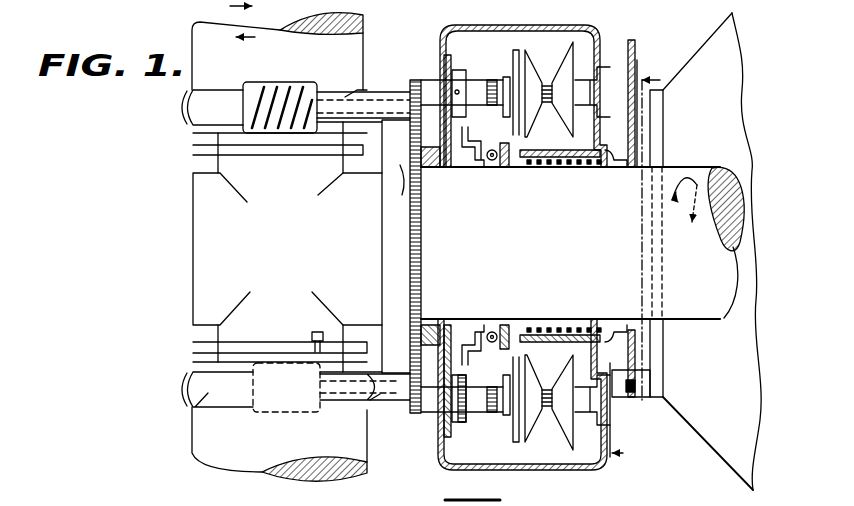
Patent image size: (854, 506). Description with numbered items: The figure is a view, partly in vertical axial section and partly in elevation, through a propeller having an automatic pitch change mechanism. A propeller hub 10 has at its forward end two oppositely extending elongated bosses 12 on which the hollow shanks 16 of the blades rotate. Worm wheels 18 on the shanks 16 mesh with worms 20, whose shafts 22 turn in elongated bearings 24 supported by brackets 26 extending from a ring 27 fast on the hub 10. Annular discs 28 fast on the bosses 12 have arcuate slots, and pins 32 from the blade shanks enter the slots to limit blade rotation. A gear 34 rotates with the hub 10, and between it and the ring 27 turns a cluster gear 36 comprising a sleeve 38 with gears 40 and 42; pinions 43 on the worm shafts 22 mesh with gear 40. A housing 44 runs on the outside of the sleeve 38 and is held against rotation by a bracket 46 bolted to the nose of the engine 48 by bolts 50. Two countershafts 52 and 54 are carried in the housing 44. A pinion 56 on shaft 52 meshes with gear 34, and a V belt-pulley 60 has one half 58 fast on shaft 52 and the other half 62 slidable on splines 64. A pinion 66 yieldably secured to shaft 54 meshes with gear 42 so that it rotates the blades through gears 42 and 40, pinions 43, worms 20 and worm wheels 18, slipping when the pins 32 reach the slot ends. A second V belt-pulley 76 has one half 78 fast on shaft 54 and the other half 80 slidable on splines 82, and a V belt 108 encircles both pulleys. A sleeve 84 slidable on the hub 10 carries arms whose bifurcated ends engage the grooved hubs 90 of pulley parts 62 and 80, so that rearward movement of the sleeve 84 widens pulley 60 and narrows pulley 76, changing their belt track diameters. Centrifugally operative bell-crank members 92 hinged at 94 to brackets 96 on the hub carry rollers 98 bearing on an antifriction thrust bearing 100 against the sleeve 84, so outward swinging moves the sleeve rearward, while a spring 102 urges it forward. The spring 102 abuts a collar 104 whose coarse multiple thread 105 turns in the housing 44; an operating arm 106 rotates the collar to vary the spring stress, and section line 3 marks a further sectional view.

The section line 3- 3 is at (640, 265).
The propeller hub 10 is at (205, 260).
The elongated bosses 12 is at (217, 168).
The hollow shanks 16 is at (200, 26).
The worm wheels 18 is at (180, 92).
The worm 20 is at (263, 82).
The shaft 22 is at (350, 88).
The elongated bearing 24 is at (356, 93).
The bracket 26 is at (380, 192).
The ring 27 is at (396, 242).
The annular discs 28 is at (306, 152).
The pins 32 is at (318, 332).
The gear 34 is at (463, 168).
The cluster gear 36 is at (434, 176).
The sleeve 38 is at (438, 319).
The gear 40 is at (422, 318).
The gear 42 is at (456, 319).
The pinions 43 is at (421, 80).
The housing 44 is at (462, 27).
The bracket 46 is at (652, 405).
The engine 48 is at (716, 430).
The bolts 50 is at (637, 398).
The countershaft 52 is at (448, 413).
The countershaft 54 is at (583, 80).
The pinion 56 is at (464, 413).
The pulley half 58 is at (524, 424).
The V belt-pulley 60 is at (548, 378).
The pulley half 62 is at (574, 430).
The splines 64 is at (540, 412).
The pinion 66 is at (450, 70).
The V belt-pulley 76 is at (548, 110).
The pulley half 78 is at (594, 44).
The pulley half 80 is at (558, 34).
The splines 82 is at (502, 80).
The sleeve 84 is at (519, 318).
The grooved hubs 90 is at (520, 60).
The centrifugally operative members 92 is at (518, 384).
The hinge 94 is at (506, 396).
The brackets 96 is at (492, 296).
The roller 98 is at (492, 168).
The antifriction thrust bearing 100 is at (501, 318).
The spring 102 is at (561, 319).
The collar 104 is at (610, 168).
The multiple thread 105 is at (626, 162).
The operating arm 106 is at (638, 68).
The V belt 108 is at (560, 62).